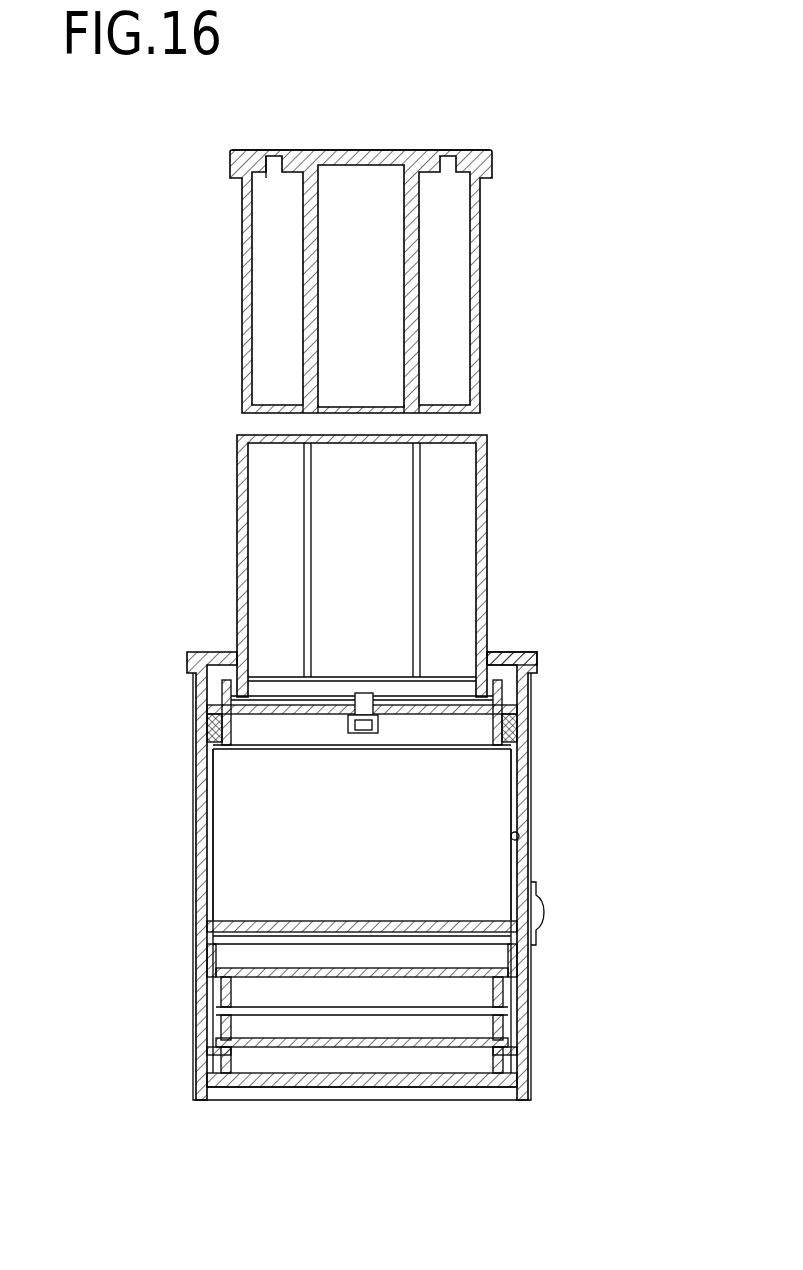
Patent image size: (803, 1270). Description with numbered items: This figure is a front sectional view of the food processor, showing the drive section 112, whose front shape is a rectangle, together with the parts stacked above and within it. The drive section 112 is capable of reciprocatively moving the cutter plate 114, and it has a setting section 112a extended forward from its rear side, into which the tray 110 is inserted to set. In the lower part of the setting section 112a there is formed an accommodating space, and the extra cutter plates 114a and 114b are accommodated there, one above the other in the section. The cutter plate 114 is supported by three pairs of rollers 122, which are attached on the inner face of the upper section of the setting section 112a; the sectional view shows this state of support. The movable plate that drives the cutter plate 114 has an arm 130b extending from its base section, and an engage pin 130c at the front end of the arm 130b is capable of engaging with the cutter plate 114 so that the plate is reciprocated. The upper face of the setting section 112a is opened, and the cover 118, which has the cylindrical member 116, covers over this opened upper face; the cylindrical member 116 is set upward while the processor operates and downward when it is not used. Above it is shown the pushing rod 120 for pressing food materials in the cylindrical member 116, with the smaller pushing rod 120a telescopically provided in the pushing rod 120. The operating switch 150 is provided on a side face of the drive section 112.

The tray 110 is at (519, 838).
The drive section 112 is at (540, 782).
The setting section 112a is at (207, 748).
The cutter plate 114 is at (500, 698).
The extra cutter plate 114a is at (525, 968).
The extra cutter plate 114b is at (525, 1040).
The cylindrical member 116 is at (263, 537).
The cover 118 is at (503, 655).
The pushing rod 120 is at (483, 309).
The smaller pushing rod 120a is at (372, 150).
The rollers 122 is at (206, 692).
The arm 130b is at (360, 733).
The engage pin 130c is at (360, 694).
The operating switch 150 is at (544, 897).